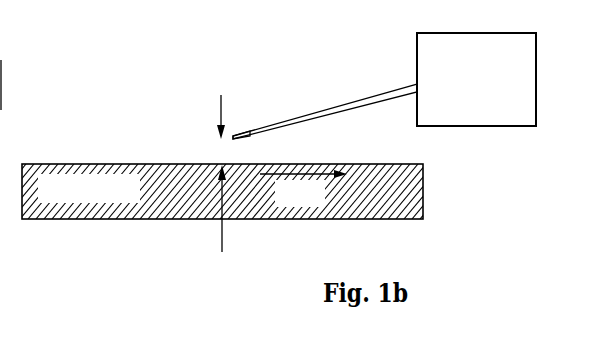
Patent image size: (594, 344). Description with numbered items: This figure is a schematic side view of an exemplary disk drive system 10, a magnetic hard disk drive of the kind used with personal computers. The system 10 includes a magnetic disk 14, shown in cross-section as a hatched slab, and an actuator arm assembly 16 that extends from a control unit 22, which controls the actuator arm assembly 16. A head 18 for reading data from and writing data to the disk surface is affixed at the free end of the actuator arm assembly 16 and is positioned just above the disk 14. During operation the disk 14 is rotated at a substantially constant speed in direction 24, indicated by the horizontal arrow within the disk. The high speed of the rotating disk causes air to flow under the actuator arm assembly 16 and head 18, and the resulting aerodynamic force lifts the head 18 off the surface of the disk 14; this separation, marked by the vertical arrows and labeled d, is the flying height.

The disk drive system 10 is at (128, 100).
The magnetic disk 14 is at (237, 191).
The actuator arm assembly 16 is at (326, 105).
The head 18 is at (237, 130).
The control unit 22 is at (476, 79).
The direction 24 is at (303, 188).